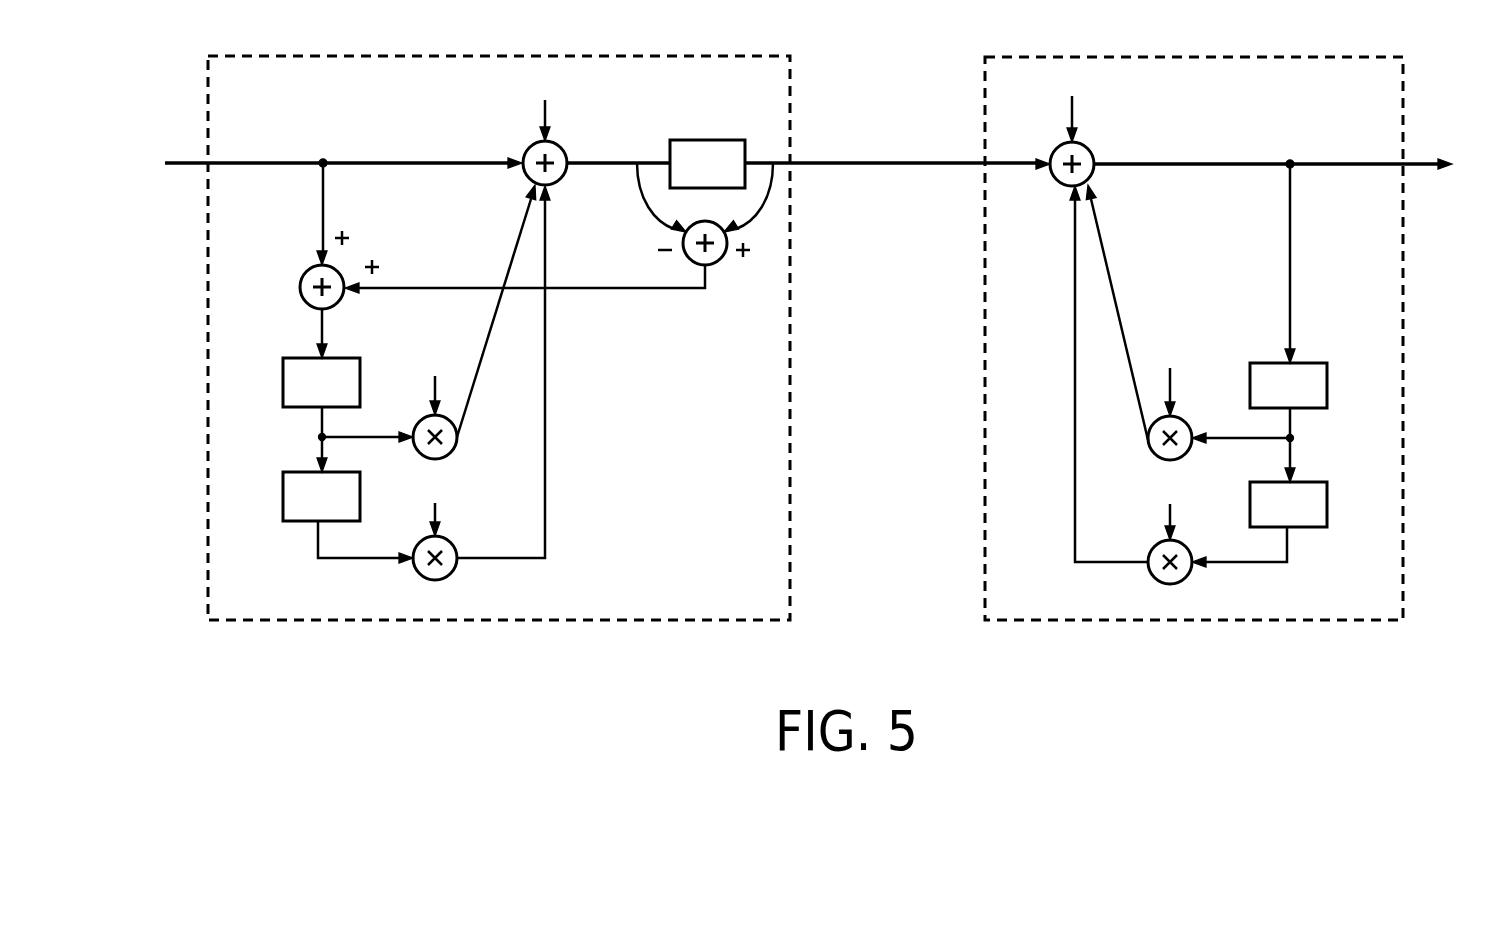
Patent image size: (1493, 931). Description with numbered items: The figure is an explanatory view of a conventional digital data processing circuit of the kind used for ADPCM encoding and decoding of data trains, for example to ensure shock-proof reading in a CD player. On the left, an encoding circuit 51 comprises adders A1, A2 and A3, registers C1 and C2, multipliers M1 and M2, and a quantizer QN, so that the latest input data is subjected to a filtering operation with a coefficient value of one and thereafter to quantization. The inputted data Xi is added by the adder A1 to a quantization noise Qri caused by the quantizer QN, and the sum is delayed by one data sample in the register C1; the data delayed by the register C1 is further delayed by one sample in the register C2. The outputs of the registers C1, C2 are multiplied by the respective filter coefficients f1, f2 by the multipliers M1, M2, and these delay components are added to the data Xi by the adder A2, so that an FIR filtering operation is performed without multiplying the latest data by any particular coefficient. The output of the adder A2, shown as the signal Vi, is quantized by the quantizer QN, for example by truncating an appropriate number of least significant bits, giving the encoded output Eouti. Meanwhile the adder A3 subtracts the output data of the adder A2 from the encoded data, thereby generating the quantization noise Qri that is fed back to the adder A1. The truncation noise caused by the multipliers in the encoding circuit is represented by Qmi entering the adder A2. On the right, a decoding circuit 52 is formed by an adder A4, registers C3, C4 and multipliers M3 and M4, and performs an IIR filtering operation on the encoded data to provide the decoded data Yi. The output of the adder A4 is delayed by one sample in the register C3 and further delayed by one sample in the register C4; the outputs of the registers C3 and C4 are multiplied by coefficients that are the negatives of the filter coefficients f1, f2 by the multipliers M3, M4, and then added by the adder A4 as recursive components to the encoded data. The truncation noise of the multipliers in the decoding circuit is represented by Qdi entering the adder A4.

The encoding circuit 51 is at (408, 620).
The decoding circuit 52 is at (1180, 622).
The adder A1 is at (303, 273).
The adder A2 is at (527, 153).
The adder A3 is at (714, 265).
The adder A4 is at (1057, 184).
The register C1 is at (360, 385).
The register C2 is at (360, 505).
The register C3 is at (1327, 385).
The register C4 is at (1327, 500).
The multiplier M1 is at (452, 453).
The multiplier M2 is at (452, 573).
The multiplier M3 is at (1153, 456).
The multiplier M4 is at (1186, 578).
The quantizer QN is at (700, 140).
The inputted data Xi is at (327, 159).
The output signal Yi is at (1287, 165).
The quantizer input signal Vi is at (618, 142).
The encoder output signal Eouti is at (897, 146).
The truncation noise Qmi is at (545, 102).
The quantization noise Qri is at (525, 299).
The truncation noise Qdi is at (1072, 100).
The filter coefficient f1 is at (438, 377).
The filter coefficient f2 is at (441, 501).